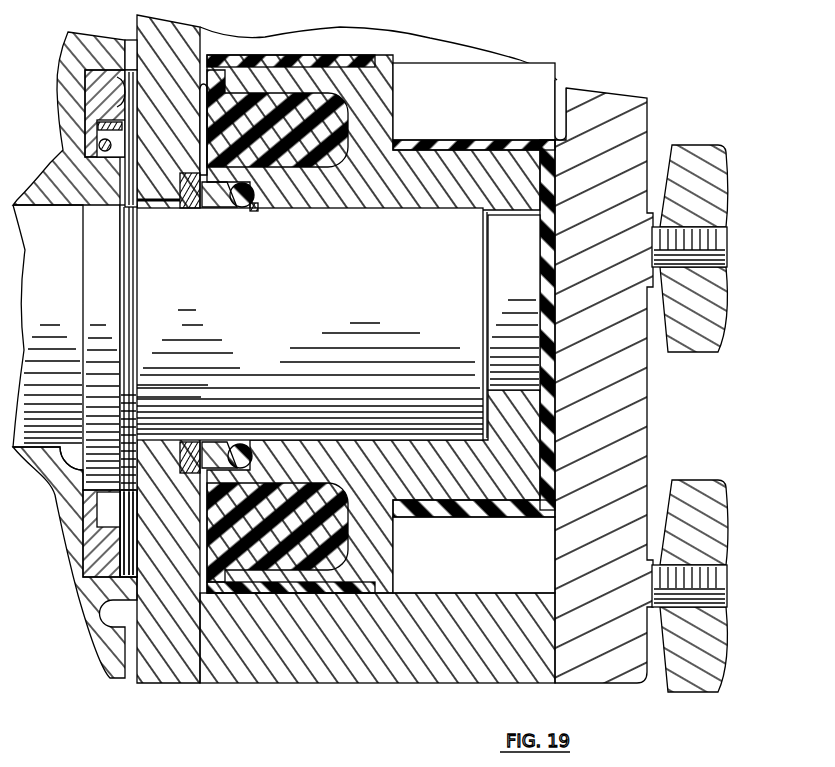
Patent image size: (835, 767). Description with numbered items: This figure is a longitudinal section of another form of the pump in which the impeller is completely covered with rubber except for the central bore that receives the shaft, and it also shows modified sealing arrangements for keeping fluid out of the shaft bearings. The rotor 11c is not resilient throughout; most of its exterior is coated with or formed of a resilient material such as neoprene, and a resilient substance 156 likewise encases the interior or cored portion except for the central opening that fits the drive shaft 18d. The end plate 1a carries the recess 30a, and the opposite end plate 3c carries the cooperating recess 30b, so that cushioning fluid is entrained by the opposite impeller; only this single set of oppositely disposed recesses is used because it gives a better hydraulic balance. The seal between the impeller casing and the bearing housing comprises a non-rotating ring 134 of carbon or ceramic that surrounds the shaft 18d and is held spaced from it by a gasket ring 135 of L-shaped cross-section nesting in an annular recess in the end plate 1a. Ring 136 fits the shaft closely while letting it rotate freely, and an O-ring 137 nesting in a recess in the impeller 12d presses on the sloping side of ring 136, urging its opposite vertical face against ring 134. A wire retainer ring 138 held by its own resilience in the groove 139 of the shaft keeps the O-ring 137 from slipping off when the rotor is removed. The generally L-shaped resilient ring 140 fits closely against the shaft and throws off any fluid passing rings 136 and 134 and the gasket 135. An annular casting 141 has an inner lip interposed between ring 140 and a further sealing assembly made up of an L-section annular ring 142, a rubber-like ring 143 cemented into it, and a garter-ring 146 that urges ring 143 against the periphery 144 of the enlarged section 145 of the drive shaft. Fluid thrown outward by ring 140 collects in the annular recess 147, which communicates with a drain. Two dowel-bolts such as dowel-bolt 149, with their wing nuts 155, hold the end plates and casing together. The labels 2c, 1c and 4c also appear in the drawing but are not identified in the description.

The housing cover 2c is at (150, 40).
The end plate 1a is at (190, 118).
The recess 30a is at (200, 56).
The impeller 12d is at (325, 75).
The rotor 11c is at (443, 163).
The housing bottom wall 1c is at (428, 686).
The opposite end plate 3c is at (648, 405).
The recess 30b is at (560, 90).
The drive shaft 18d is at (310, 324).
The groove 139 is at (258, 338).
The resilient substance 156 is at (547, 267).
The enlarged section of the drive shaft 145 is at (82, 303).
The resilient ring 140 is at (120, 190).
The housing end part 4c is at (98, 657).
The annular casting 141 is at (90, 92).
The resilient rubber-like ring 143 is at (98, 127).
The garter-ring 146 is at (100, 145).
The annular ring 142 is at (118, 160).
The periphery 144 is at (82, 500).
The annular recess 147 is at (130, 520).
The gasket ring 135 is at (170, 201).
The non-rotating ring 134 is at (193, 208).
The ring 136 is at (220, 440).
The O-ring 137 is at (262, 210).
The retainer ring 138 is at (256, 215).
The wing nuts 155 is at (720, 302).
The dowel-bolt 149 is at (707, 238).